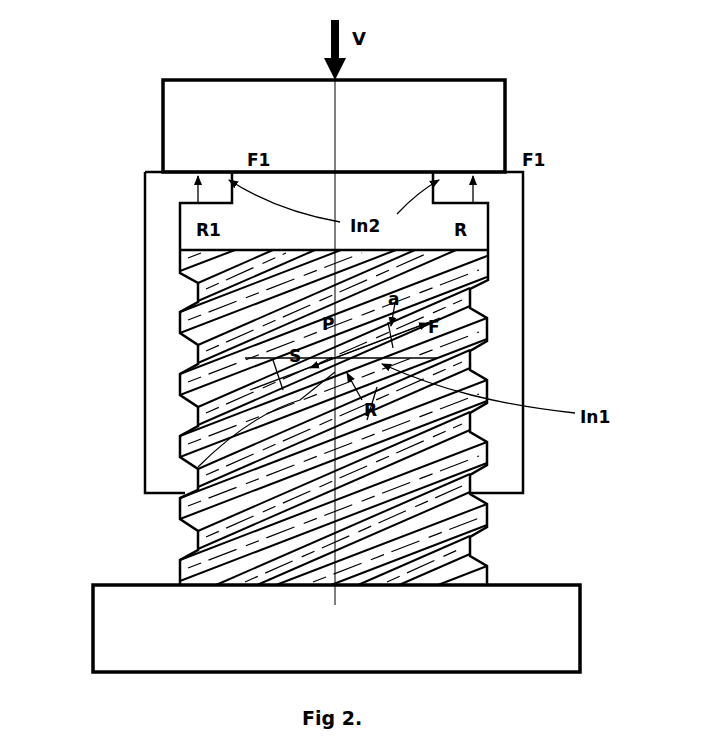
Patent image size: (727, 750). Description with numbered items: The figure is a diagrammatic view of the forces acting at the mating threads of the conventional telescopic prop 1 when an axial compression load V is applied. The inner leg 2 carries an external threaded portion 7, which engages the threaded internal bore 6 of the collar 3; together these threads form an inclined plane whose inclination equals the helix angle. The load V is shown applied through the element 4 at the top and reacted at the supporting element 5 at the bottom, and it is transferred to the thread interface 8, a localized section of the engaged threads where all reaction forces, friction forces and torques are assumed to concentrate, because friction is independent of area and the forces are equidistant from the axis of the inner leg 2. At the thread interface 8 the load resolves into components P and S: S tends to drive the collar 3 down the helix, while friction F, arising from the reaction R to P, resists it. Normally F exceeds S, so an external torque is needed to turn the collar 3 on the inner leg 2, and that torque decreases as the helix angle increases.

The telescopic prop 1 is at (527, 219).
The inner leg 2 is at (484, 534).
The collar 3 is at (506, 353).
The upper load plate 4 is at (162, 121).
The base support 5 is at (582, 628).
The threaded internal bore 6 is at (179, 322).
The threaded portion 7 is at (196, 533).
The thread interface 8 is at (200, 474).